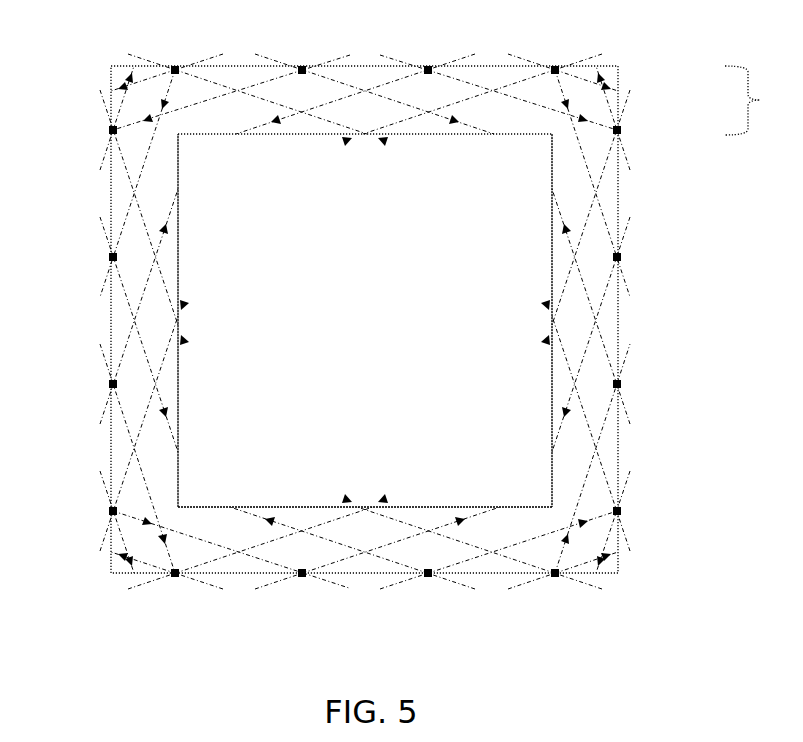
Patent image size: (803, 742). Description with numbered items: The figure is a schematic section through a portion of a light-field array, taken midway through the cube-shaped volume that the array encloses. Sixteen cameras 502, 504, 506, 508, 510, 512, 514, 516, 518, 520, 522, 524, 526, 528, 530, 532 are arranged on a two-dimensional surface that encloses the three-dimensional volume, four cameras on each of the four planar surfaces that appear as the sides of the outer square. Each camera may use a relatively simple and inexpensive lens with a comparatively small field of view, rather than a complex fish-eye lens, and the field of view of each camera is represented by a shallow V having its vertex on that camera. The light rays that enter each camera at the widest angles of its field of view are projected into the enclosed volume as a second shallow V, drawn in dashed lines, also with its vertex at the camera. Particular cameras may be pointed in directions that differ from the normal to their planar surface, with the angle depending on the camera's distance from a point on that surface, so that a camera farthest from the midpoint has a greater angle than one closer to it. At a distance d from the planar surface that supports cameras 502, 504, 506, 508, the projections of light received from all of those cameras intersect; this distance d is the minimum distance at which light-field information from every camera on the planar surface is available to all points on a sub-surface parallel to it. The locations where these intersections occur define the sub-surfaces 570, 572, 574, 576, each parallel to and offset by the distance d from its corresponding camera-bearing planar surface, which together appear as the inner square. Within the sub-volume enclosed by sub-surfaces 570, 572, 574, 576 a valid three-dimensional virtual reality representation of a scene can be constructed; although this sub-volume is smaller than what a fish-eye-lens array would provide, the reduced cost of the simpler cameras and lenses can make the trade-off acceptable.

The camera 502 is at (175, 66).
The camera 504 is at (302, 66).
The camera 506 is at (428, 66).
The camera 508 is at (555, 66).
The camera 510 is at (619, 129).
The camera 512 is at (619, 256).
The camera 514 is at (619, 382).
The camera 516 is at (619, 510).
The camera 518 is at (555, 576).
The camera 520 is at (428, 576).
The camera 522 is at (302, 576).
The camera 524 is at (175, 576).
The camera 526 is at (113, 510).
The camera 528 is at (113, 383).
The camera 530 is at (113, 256).
The camera 532 is at (113, 128).
The sub-surface 570 is at (477, 136).
The sub-surface 572 is at (550, 418).
The sub-surface 574 is at (491, 505).
The sub-surface 576 is at (178, 458).
The distance d is at (753, 100).